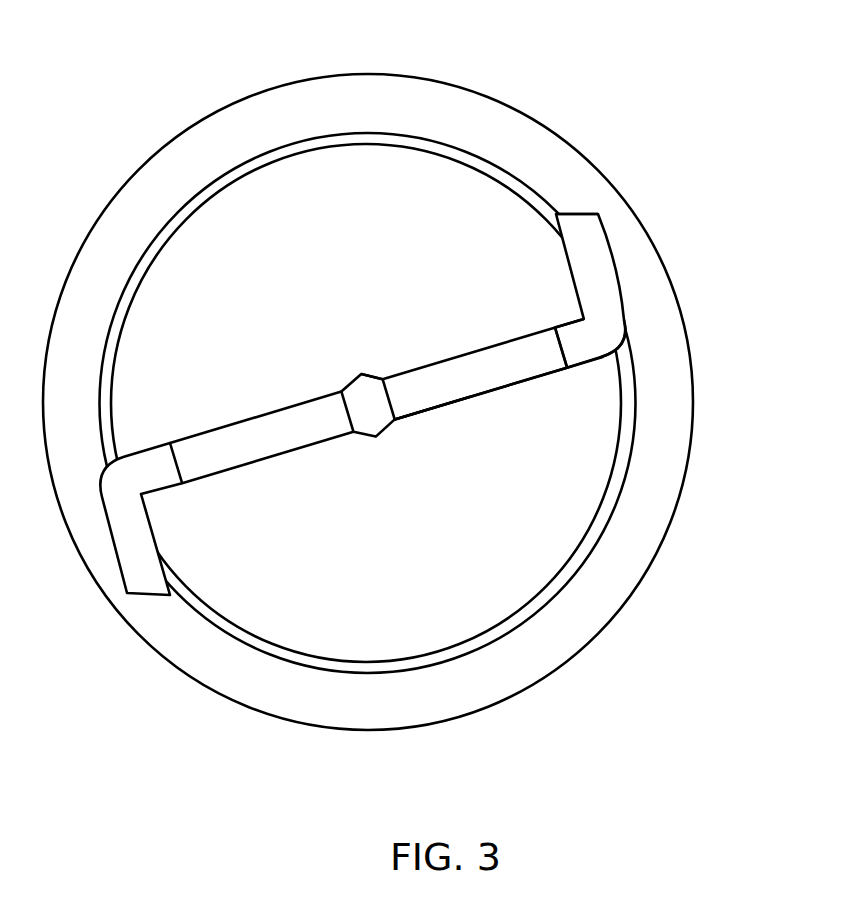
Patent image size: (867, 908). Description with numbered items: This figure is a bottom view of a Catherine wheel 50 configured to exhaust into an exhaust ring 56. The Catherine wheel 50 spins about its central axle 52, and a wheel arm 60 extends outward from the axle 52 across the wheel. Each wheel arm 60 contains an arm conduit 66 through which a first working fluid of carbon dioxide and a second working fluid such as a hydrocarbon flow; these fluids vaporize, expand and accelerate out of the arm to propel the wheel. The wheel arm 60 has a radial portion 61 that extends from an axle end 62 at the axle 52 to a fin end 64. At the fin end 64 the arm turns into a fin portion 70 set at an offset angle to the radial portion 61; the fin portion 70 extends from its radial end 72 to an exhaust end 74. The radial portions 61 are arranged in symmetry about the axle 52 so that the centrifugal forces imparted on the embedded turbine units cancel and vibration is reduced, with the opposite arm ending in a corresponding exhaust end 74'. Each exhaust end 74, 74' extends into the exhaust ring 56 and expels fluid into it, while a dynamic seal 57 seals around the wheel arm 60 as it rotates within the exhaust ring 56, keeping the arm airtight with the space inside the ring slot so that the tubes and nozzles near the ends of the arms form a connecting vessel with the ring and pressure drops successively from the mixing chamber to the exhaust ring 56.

The Catherine wheel 50 is at (387, 373).
The axle 52 is at (344, 363).
The exhaust ring 56 is at (311, 93).
The dynamic seal 57 is at (625, 445).
The wheel arm 60 is at (387, 371).
The radial portion 61 is at (457, 387).
The axle end 62 is at (383, 380).
The fin end 64 is at (547, 323).
The arm conduit 66 is at (418, 402).
The fin portion 70 is at (628, 258).
The radial end 72 is at (607, 330).
The exhaust end 74 is at (612, 160).
The exhaust end 74' is at (138, 557).